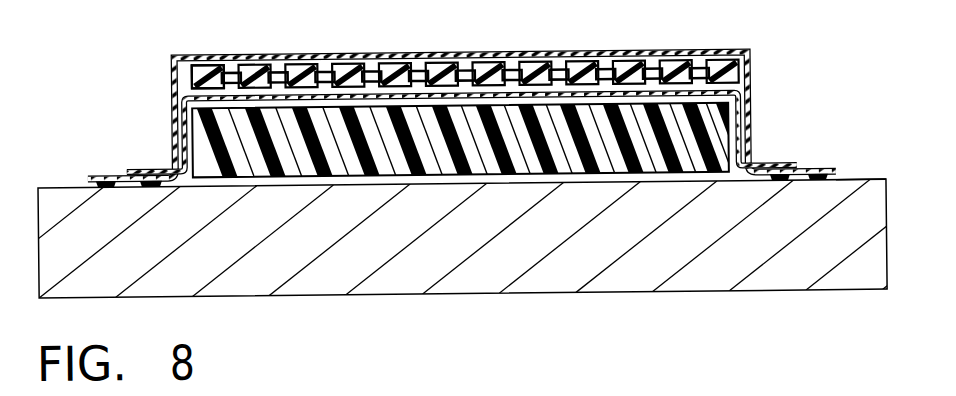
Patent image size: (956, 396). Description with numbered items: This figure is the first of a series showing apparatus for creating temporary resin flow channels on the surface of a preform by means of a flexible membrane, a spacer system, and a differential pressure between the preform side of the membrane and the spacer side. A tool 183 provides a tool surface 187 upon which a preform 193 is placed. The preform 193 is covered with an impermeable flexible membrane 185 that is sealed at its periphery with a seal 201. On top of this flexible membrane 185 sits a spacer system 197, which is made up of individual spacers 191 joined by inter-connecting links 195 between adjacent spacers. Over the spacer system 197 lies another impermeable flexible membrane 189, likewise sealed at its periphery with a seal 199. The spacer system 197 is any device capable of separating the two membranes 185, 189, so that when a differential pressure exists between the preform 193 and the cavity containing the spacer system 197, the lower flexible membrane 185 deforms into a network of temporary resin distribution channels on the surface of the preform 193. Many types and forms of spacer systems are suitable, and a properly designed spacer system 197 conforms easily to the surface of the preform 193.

The tool 183 is at (240, 279).
The impermeable flexible membrane 185 is at (742, 186).
The tool surface 187 is at (857, 187).
The impermeable flexible membrane 189 is at (752, 72).
The individual spacer 191 is at (490, 70).
The preform 193 is at (514, 168).
The inter-connecting link 195 is at (279, 75).
The spacer system 197 is at (209, 60).
The seal 199 is at (117, 189).
The seal 201 is at (143, 189).